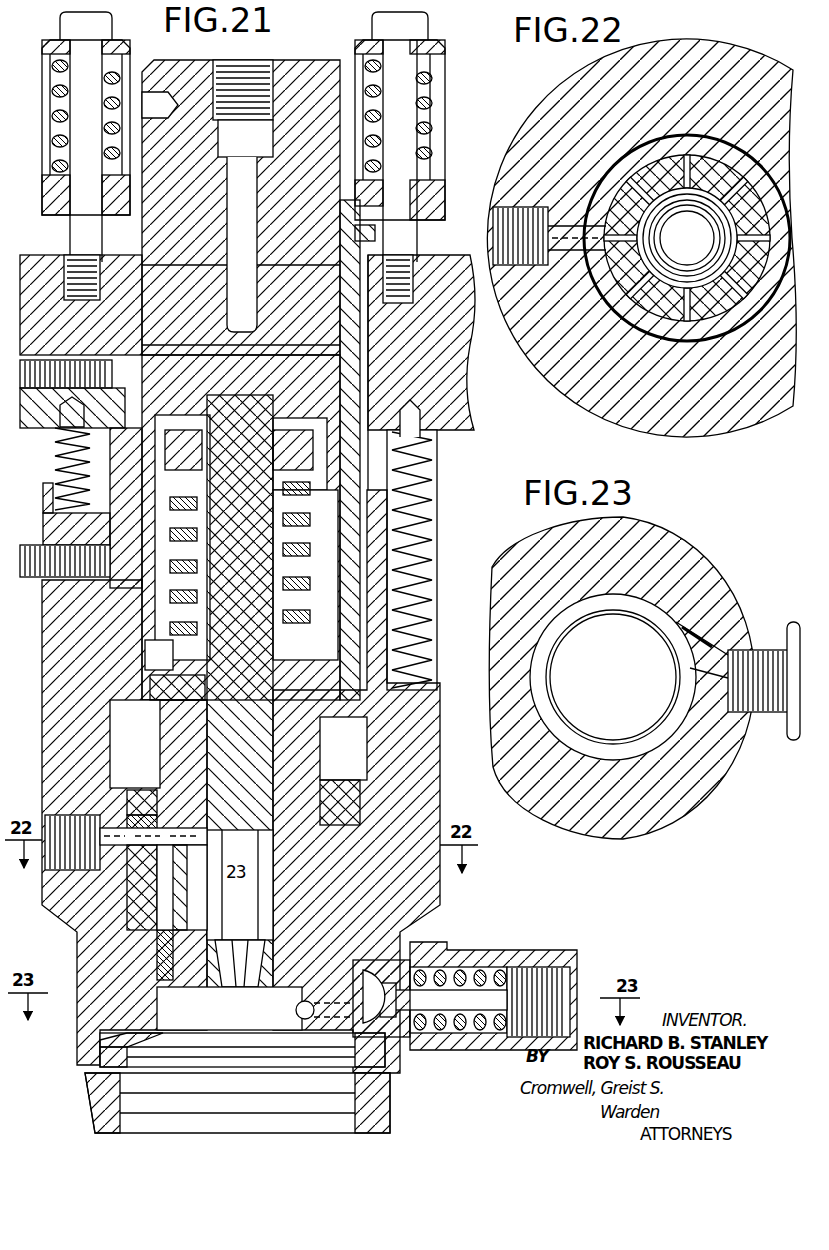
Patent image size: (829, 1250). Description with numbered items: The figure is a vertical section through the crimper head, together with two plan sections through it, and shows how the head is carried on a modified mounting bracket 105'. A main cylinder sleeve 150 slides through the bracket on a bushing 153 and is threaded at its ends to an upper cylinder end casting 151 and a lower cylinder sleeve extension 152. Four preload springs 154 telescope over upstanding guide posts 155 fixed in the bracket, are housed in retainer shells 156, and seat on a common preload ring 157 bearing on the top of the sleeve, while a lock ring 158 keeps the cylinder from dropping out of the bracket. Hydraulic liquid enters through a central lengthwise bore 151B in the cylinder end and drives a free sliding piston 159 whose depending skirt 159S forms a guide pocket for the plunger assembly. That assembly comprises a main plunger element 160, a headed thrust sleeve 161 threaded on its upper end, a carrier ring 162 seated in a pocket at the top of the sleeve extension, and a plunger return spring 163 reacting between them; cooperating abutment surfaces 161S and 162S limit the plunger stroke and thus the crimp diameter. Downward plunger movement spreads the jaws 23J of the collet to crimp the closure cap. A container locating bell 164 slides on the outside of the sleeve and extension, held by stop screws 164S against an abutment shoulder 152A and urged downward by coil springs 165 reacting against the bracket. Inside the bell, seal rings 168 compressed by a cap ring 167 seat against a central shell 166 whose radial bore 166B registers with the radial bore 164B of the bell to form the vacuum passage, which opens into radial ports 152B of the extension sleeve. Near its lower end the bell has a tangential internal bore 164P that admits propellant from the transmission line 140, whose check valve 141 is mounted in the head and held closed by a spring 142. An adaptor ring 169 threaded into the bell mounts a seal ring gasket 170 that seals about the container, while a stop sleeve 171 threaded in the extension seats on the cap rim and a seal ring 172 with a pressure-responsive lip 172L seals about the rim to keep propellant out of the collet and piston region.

In FIG. 21, the modified mounting bracket 105' is at (499, 400).
In FIG. 21, the transmission line 140 is at (522, 950).
In FIG. 23, the transmission line 140 is at (794, 732).
In FIG. 21, the check valve 141 is at (402, 1052).
In FIG. 21, the spring 142 is at (478, 1034).
In FIG. 21, the main cylinder sleeve 150 is at (420, 440).
In FIG. 21, the upper cylinder end casting 151 is at (174, 231).
In FIG. 21, the central lengthwise bore 151B is at (250, 210).
In FIG. 21, the lower cylinder sleeve extension 152 is at (238, 762).
In FIG. 22, the lower cylinder sleeve extension 152 is at (684, 340).
In FIG. 21, the annular exterior abutment shoulder 152A is at (145, 655).
In FIG. 21, the radial ports 152B is at (240, 883).
In FIG. 22, the radial ports 152B is at (724, 162).
In FIG. 21, the bushing 153 is at (370, 364).
In FIG. 21, the preload springs 154 is at (50, 82).
In FIG. 21, the upstanding guide posts 155 is at (78, 130).
In FIG. 21, the retainer shells 156 is at (52, 40).
In FIG. 21, the preload ring 157 is at (440, 200).
In FIG. 21, the lock ring 158 is at (376, 233).
In FIG. 21, the free sliding piston 159 is at (262, 383).
In FIG. 21, the depending skirt 159S is at (350, 462).
In FIG. 21, the main plunger element 160 is at (255, 589).
In FIG. 21, the headed thrust sleeve 161 is at (268, 475).
In FIG. 21, the abutment surface 161S is at (278, 592).
In FIG. 21, the carrier ring 162 is at (160, 680).
In FIG. 21, the abutment surface 162S is at (278, 620).
In FIG. 21, the plunger return spring 163 is at (298, 548).
In FIG. 21, the container locating bell 164 is at (85, 936).
In FIG. 22, the container locating bell 164 is at (727, 95).
In FIG. 23, the container locating bell 164 is at (647, 574).
In FIG. 21, the radial bore 164B is at (102, 830).
In FIG. 22, the radial bore 164B is at (558, 188).
In FIG. 21, the internal bore 164P is at (296, 1012).
In FIG. 23, the internal bore 164P is at (722, 646).
In FIG. 21, the stop screws 164S is at (36, 580).
In FIG. 21, the coil springs 165 is at (56, 470).
In FIG. 21, the central shell 166 is at (128, 886).
In FIG. 22, the central shell 166 is at (658, 134).
In FIG. 21, the radial bore 166B is at (118, 828).
In FIG. 22, the radial bore 166B is at (600, 168).
In FIG. 21, the cap ring 167 is at (145, 792).
In FIG. 21, the seal rings 168 is at (146, 820).
In FIG. 21, the adaptor ring 169 is at (118, 1095).
In FIG. 21, the seal ring gasket 170 is at (160, 1050).
In FIG. 23, the seal ring gasket 170 is at (553, 726).
In FIG. 21, the stop sleeve 171 is at (352, 962).
In FIG. 21, the seal ring 172 is at (358, 976).
In FIG. 21, the self-sealing circumferential lip 172L is at (172, 992).
In FIG. 21, the collet jaws 23J is at (228, 960).